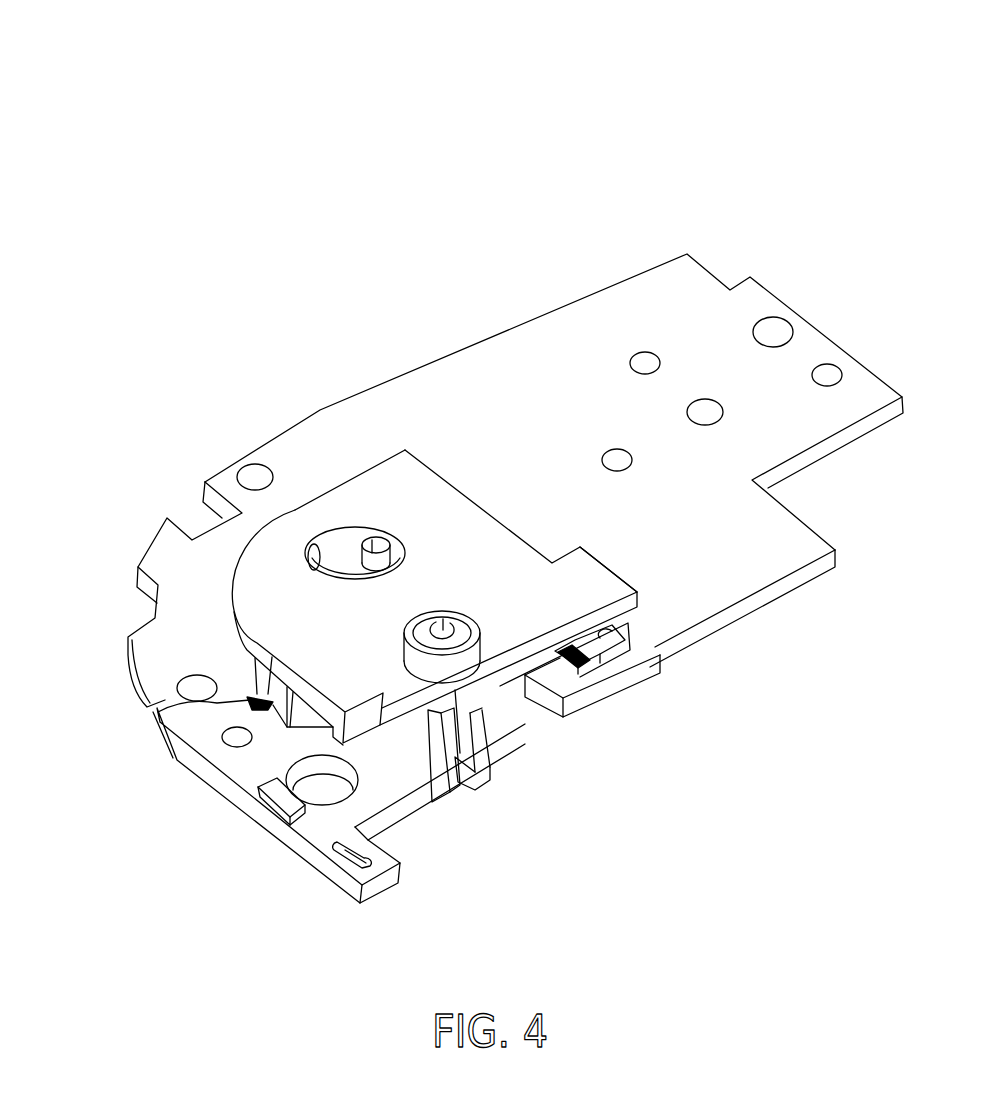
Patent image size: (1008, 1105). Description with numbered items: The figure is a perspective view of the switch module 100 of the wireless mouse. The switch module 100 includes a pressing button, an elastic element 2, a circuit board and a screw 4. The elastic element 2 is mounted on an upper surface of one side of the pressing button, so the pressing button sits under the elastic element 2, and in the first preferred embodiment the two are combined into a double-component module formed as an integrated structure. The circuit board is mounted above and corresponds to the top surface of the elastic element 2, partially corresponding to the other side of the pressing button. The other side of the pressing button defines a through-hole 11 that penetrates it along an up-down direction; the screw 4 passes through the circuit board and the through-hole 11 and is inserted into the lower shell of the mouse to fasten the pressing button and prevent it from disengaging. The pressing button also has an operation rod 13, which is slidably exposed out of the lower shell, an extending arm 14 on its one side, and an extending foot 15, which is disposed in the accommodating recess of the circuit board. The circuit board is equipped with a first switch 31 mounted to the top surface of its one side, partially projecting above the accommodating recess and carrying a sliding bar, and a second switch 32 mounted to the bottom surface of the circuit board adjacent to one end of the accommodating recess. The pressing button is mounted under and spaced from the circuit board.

The switch module 100 is at (90, 47).
The elastic element 2 is at (250, 703).
The screw 4 is at (372, 537).
The through-hole 11 is at (323, 565).
The operation rod 13 is at (463, 667).
The extending arm 14 is at (598, 582).
The extending foot 15 is at (440, 785).
The first switch 31 is at (467, 775).
The second switch 32 is at (590, 660).